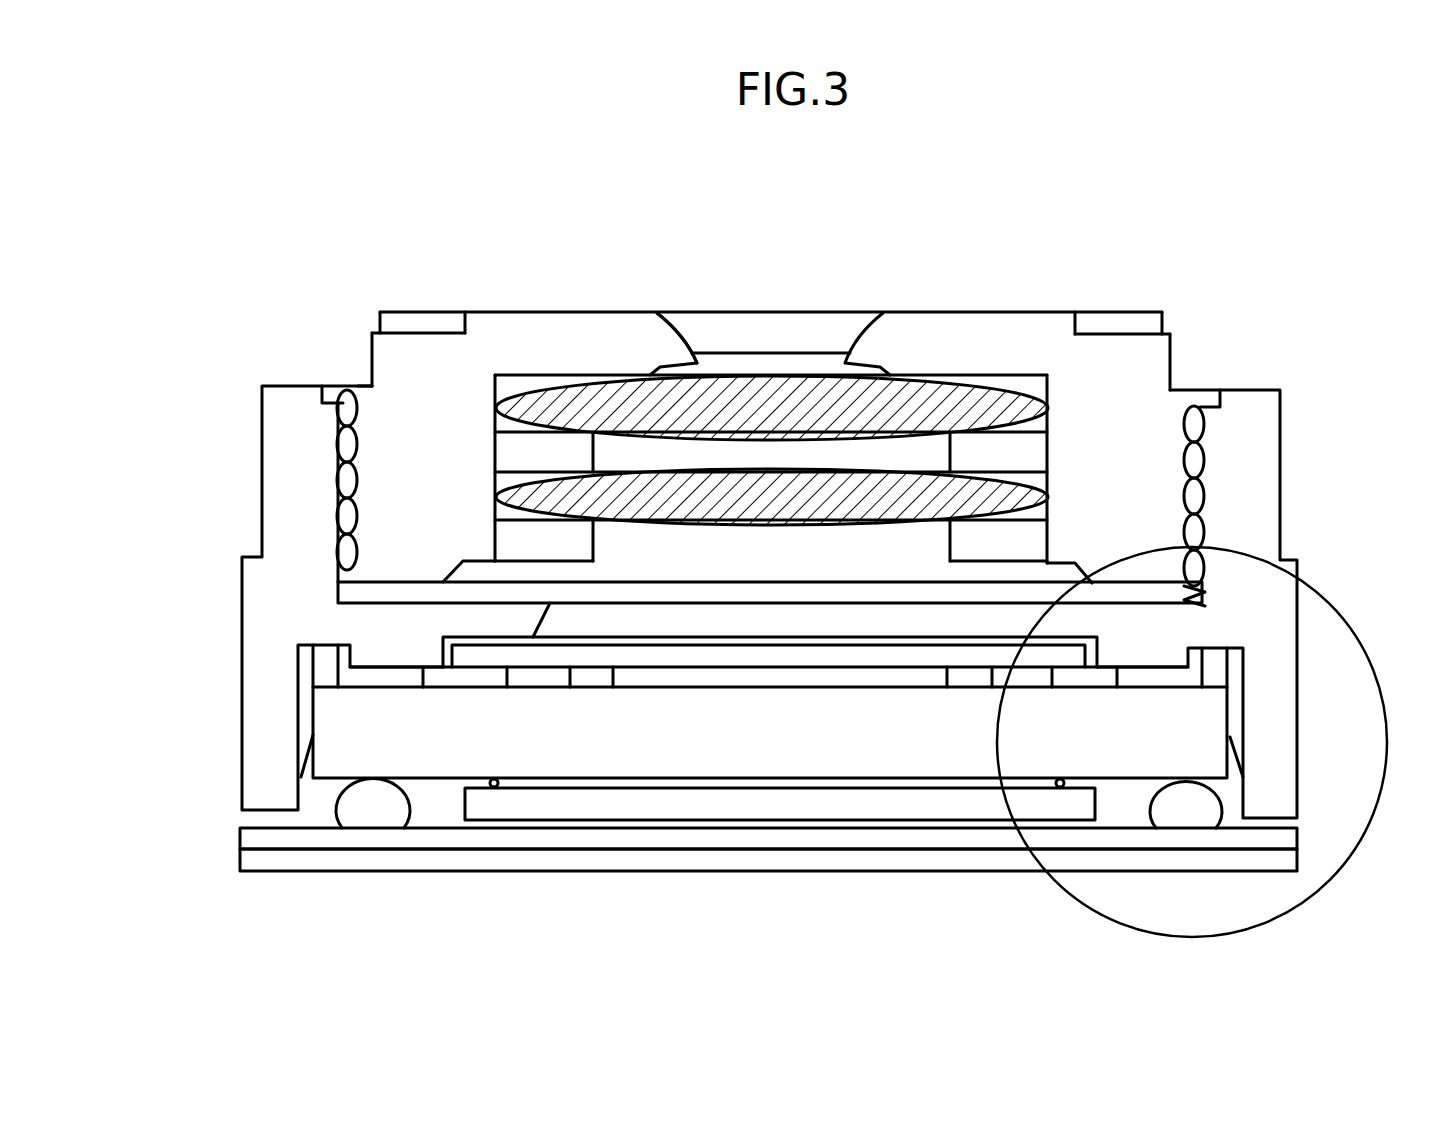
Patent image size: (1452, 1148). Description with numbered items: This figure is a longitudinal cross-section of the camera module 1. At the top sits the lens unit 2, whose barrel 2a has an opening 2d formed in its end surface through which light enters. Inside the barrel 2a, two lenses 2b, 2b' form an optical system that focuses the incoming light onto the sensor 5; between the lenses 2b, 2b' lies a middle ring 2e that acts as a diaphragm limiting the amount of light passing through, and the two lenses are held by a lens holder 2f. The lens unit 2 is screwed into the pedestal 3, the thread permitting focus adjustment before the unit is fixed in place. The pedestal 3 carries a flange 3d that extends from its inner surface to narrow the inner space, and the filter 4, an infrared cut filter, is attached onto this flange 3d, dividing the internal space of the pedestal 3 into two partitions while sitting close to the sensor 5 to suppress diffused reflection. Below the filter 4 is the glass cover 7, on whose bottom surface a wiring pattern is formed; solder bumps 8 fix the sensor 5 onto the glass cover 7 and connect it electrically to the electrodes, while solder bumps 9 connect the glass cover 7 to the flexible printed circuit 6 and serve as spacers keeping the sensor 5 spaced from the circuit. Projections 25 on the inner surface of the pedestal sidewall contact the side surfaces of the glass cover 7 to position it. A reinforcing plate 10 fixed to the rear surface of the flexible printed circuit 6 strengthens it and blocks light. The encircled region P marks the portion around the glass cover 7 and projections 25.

The camera module 1 is at (447, 238).
The lens unit 2 is at (510, 313).
The barrel 2a is at (920, 345).
The lens 2b is at (806, 401).
The lens 2b' is at (810, 497).
The opening 2d is at (682, 323).
The middle ring 2e is at (1030, 457).
The lens holder 2f is at (1030, 547).
The pedestal 3 is at (262, 435).
The flange 3d is at (1017, 627).
The filter 4 is at (717, 647).
The sensor 5 is at (562, 805).
The flexible printed circuit 6 is at (1285, 840).
The glass cover 7 is at (1205, 715).
The solder bumps 8 is at (493, 785).
The solder bumps 9 is at (370, 807).
The reinforcing plate 10 is at (1285, 858).
The projections 25 is at (305, 728).
The enlarged portion P is at (1377, 652).